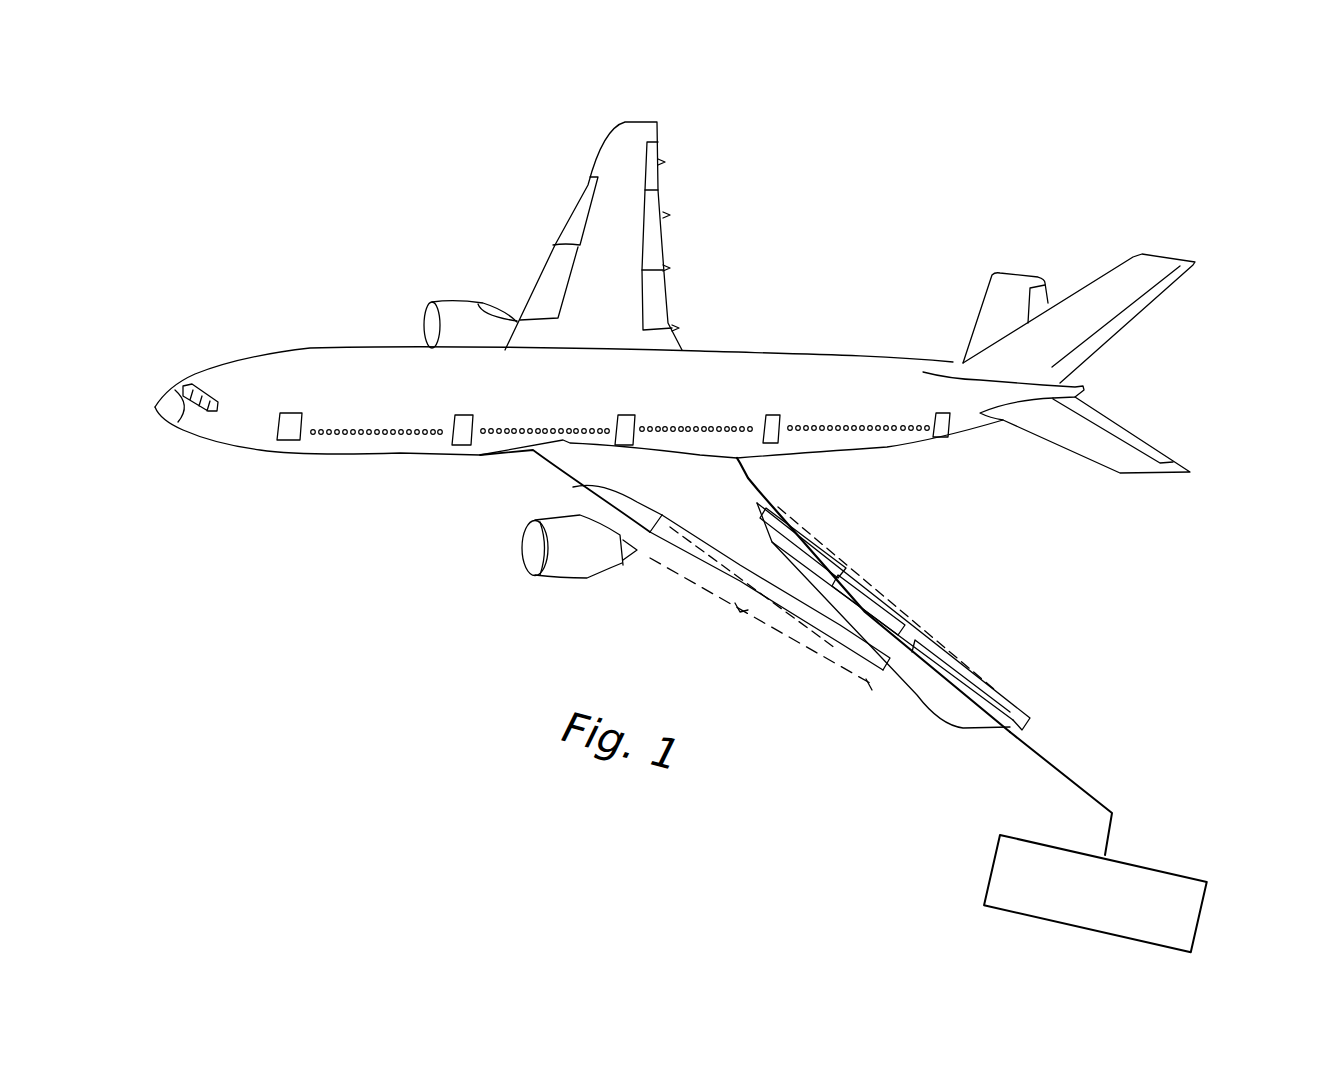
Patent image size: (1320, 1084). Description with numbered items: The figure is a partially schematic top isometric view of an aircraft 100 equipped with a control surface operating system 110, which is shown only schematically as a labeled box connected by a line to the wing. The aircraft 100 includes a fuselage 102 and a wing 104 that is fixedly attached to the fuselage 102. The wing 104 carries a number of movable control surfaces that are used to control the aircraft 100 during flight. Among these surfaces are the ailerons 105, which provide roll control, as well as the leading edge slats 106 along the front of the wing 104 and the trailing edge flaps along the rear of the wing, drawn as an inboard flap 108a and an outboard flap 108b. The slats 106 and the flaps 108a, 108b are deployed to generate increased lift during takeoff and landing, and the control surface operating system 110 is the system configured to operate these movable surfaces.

The aircraft 100 is at (304, 170).
The fuselage 102 is at (307, 345).
The wing 104 is at (920, 697).
The ailerons 105 is at (968, 672).
The leading edge slats 106 is at (573, 487).
The inboard flap 108a is at (808, 542).
The outboard flap 108b is at (892, 605).
The control surface operating system 110 is at (1160, 870).